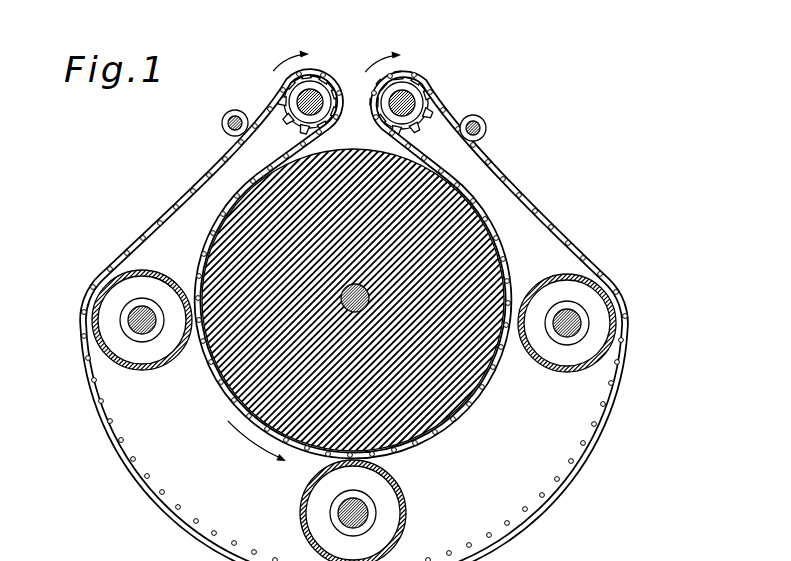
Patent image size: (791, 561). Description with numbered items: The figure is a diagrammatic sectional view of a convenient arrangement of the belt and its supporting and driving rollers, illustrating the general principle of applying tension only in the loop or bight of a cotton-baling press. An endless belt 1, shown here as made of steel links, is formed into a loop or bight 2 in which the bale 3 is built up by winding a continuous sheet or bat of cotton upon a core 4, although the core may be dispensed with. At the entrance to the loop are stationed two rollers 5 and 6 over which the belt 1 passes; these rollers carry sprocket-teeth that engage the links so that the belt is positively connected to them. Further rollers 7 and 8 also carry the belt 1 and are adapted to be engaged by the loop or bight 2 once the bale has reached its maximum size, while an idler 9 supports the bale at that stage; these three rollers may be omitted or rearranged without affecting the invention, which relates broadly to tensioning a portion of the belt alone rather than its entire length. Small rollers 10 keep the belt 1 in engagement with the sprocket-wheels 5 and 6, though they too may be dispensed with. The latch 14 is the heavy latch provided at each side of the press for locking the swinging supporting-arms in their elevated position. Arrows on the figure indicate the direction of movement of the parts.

The endless belt 1 is at (360, 316).
The loop or bight 2 is at (353, 315).
The bale 3 is at (357, 300).
The core 4 is at (369, 298).
The roller 5 is at (316, 86).
The roller 6 is at (410, 94).
The roller 7 is at (141, 332).
The roller 8 is at (567, 336).
The idler 9 is at (352, 510).
The small rollers 10 is at (231, 111).
The latch 14 is at (339, 555).